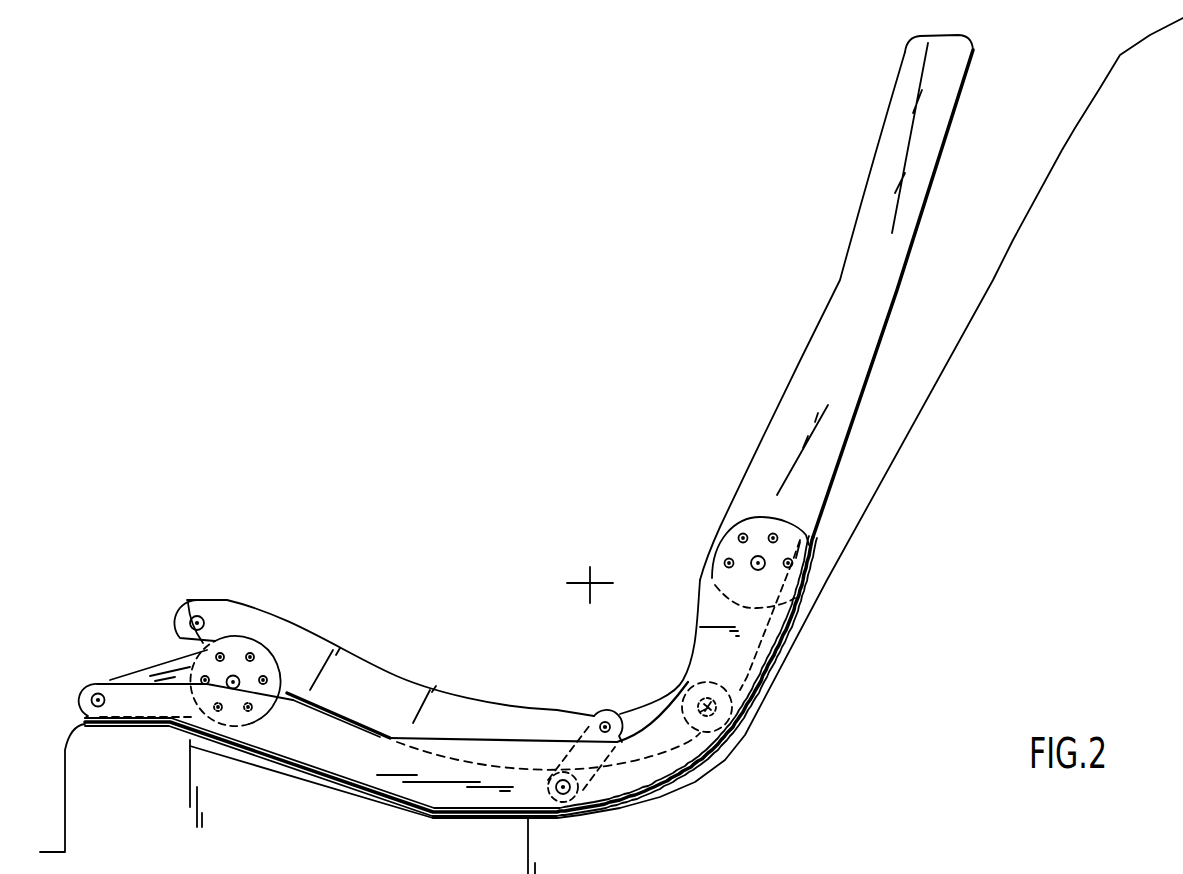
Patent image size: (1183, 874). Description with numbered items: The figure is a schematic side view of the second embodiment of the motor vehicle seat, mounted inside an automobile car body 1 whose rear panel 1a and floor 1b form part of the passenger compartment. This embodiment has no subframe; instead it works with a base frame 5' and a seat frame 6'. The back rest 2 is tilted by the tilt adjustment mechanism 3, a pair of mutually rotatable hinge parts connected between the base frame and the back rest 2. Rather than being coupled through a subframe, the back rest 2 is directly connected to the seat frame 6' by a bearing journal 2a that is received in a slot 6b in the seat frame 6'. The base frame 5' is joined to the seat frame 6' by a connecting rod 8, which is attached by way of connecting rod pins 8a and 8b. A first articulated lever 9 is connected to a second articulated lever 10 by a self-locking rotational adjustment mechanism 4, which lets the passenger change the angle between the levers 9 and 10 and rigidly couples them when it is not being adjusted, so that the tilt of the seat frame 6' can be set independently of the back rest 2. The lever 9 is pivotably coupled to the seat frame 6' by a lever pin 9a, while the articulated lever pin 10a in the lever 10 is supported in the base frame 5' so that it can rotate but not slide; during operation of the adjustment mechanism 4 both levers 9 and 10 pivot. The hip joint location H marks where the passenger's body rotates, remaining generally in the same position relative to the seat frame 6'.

The automobile car body 1 is at (1056, 107).
The rear panel 1a is at (1008, 248).
The floor 1b is at (328, 786).
The back rest 2 is at (807, 363).
The bearing journal 2a is at (753, 723).
The tilt adjustment mechanism 3 is at (722, 528).
The self-locking rotational adjustment mechanism 4 is at (260, 638).
The base frame 5' is at (456, 824).
The seat frame 6' is at (443, 659).
The slot 6b is at (720, 760).
The connecting rod 8 is at (588, 741).
The connecting rod pin 8a is at (567, 792).
The connecting rod pin 8b is at (608, 712).
The first articulated lever 9 is at (215, 627).
The lever pin 9a is at (177, 613).
The second articulated lever 10 is at (153, 665).
The articulated lever pin 10a is at (100, 708).
The hip joint location H is at (588, 585).